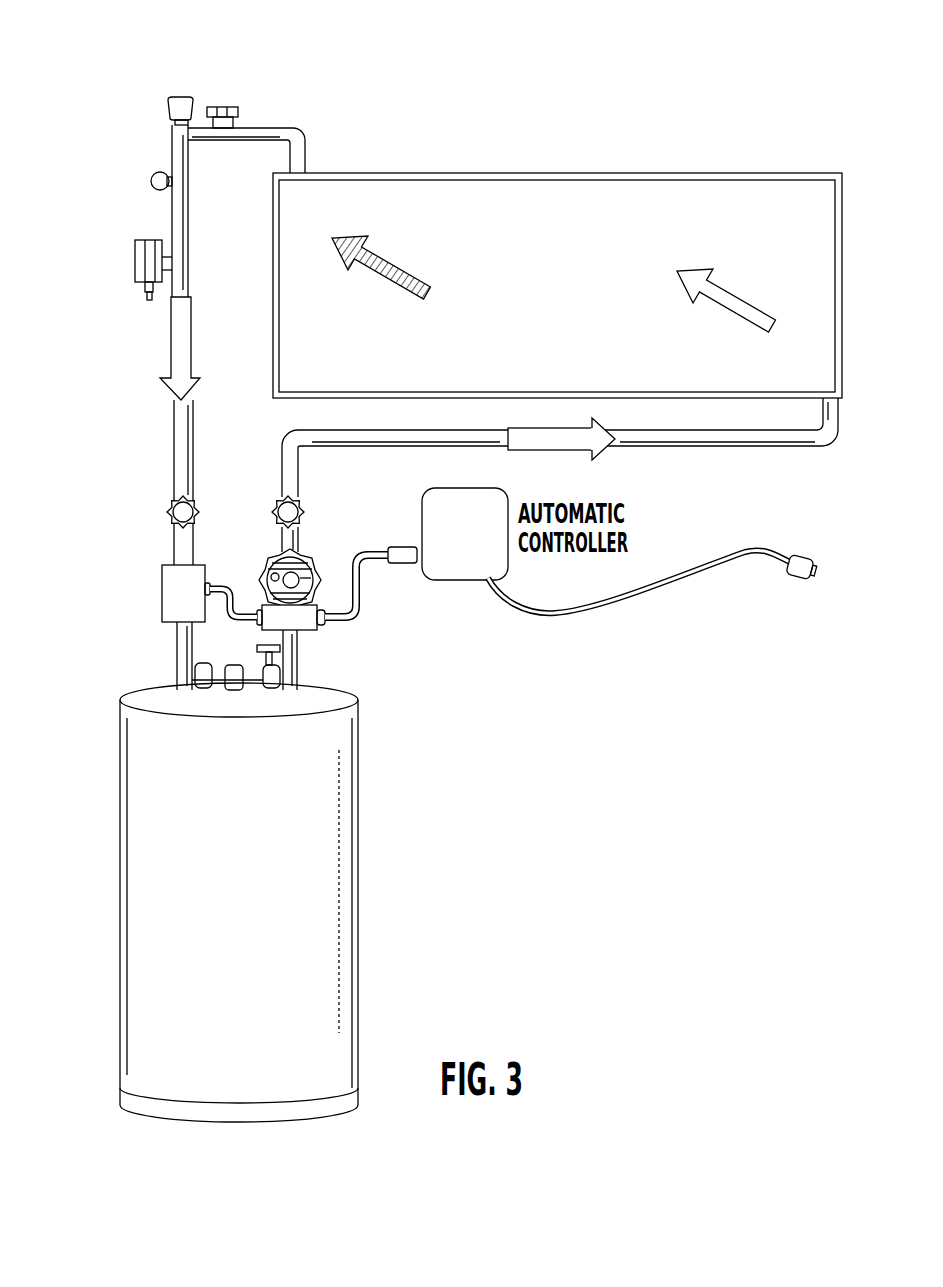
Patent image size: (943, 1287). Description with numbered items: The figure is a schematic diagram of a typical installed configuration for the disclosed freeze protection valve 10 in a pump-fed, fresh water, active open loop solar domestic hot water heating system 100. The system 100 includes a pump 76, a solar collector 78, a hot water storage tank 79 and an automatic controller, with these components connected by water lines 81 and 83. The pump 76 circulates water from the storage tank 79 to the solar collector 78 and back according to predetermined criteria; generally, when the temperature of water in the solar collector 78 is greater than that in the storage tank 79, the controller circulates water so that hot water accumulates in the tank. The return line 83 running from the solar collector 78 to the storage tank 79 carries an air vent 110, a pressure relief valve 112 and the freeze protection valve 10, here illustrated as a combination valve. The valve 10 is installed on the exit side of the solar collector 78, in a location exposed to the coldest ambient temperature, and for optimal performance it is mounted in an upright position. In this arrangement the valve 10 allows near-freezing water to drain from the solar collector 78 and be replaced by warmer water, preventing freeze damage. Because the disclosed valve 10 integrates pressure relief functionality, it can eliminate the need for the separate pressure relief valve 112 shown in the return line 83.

The solar hot water system 100 is at (357, 131).
The solar collector 78 is at (471, 244).
The return line 83 is at (172, 450).
The air vent 110 is at (232, 107).
The pressure relief valve 112 is at (135, 178).
The freeze protection valve 10 is at (128, 262).
The water line 81 is at (755, 448).
The pump 76 is at (310, 630).
The storage tank 79 is at (322, 853).